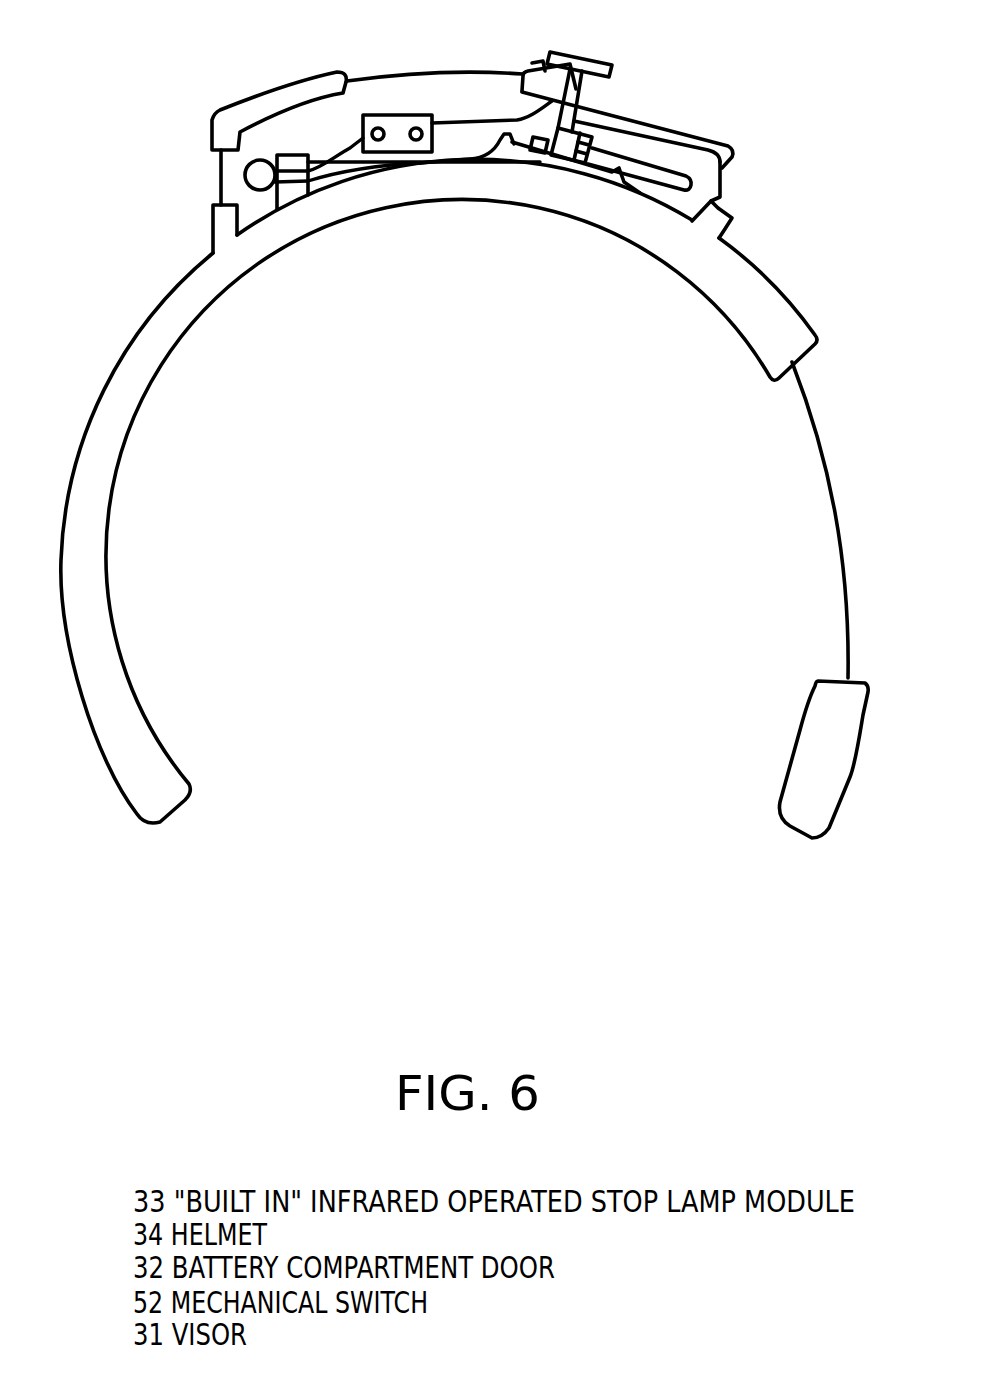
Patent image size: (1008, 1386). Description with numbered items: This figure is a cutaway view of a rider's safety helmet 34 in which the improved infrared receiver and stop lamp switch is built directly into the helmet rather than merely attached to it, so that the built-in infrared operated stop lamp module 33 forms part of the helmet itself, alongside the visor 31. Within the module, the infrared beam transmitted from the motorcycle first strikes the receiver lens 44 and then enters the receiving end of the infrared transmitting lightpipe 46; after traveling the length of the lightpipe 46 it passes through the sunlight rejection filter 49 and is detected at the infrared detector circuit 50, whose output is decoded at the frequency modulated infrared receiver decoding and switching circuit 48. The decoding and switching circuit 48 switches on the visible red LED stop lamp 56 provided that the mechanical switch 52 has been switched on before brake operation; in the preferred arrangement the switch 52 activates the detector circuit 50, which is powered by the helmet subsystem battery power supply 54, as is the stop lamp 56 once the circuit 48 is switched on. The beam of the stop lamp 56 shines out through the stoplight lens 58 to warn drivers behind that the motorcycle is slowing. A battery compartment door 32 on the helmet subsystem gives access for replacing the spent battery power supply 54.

The visor 31 is at (831, 463).
The battery compartment door 32 is at (421, 70).
The built-in infrared operated stop lamp module 33 is at (610, 137).
The helmet 34 is at (127, 352).
The receiver lens 44 is at (728, 192).
The infrared transmitting lightpipe 46 is at (668, 168).
The frequency modulated infrared receiver decoding and switching circuit 48 is at (558, 162).
The sunlight rejection filter 49 is at (628, 120).
The infrared detector circuit 50 is at (580, 128).
The mechanical switch 52 is at (580, 56).
The helmet subsystem battery power supply 54 is at (382, 115).
The visible light emitter stop lamp 56 is at (243, 172).
The stoplight lens 58 is at (216, 193).